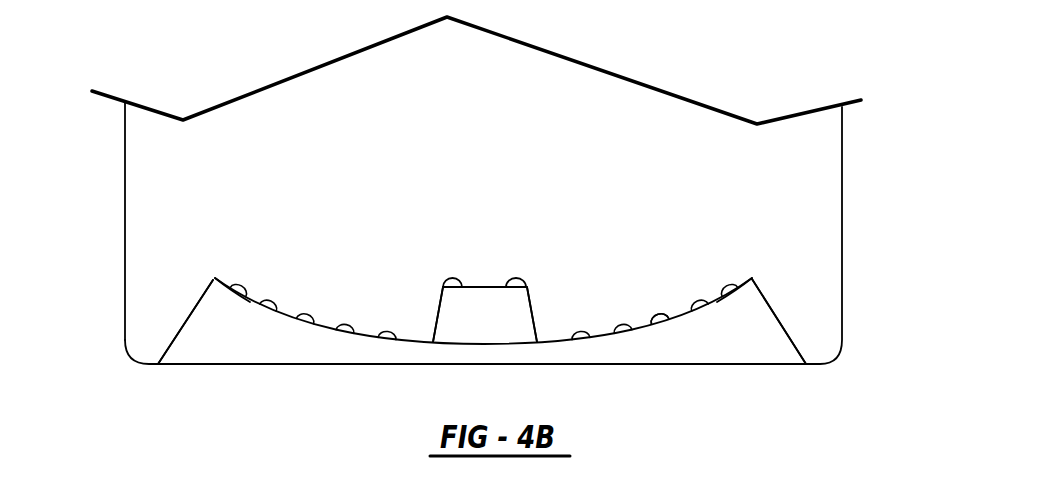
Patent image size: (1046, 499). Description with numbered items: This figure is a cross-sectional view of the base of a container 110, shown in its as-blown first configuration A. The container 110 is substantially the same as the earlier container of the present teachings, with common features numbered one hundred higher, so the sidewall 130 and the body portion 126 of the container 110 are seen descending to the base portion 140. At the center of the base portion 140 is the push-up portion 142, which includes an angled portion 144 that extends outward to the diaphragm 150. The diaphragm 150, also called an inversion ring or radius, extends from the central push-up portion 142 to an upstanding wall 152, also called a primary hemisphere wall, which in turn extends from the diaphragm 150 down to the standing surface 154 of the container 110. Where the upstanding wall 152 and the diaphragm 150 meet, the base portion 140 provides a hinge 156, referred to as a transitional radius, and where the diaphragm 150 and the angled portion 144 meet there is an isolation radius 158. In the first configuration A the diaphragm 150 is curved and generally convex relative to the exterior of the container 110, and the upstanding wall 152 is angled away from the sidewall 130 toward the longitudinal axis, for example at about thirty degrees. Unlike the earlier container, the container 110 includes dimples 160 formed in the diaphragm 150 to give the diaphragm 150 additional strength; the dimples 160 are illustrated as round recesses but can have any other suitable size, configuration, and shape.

The container 110 is at (98, 129).
The sidewall 130 is at (125, 224).
The body portion 126 is at (125, 305).
The base portion 140 is at (306, 375).
The push-up portion 142 is at (482, 287).
The angled portion 144 is at (532, 323).
The diaphragm 150 is at (326, 324).
The upstanding wall 152 is at (188, 332).
The standing surface 154 is at (160, 364).
The hinge 156 is at (215, 278).
The isolation radius 158 is at (433, 343).
The dimples 160 is at (270, 300).
The first configuration A is at (650, 328).